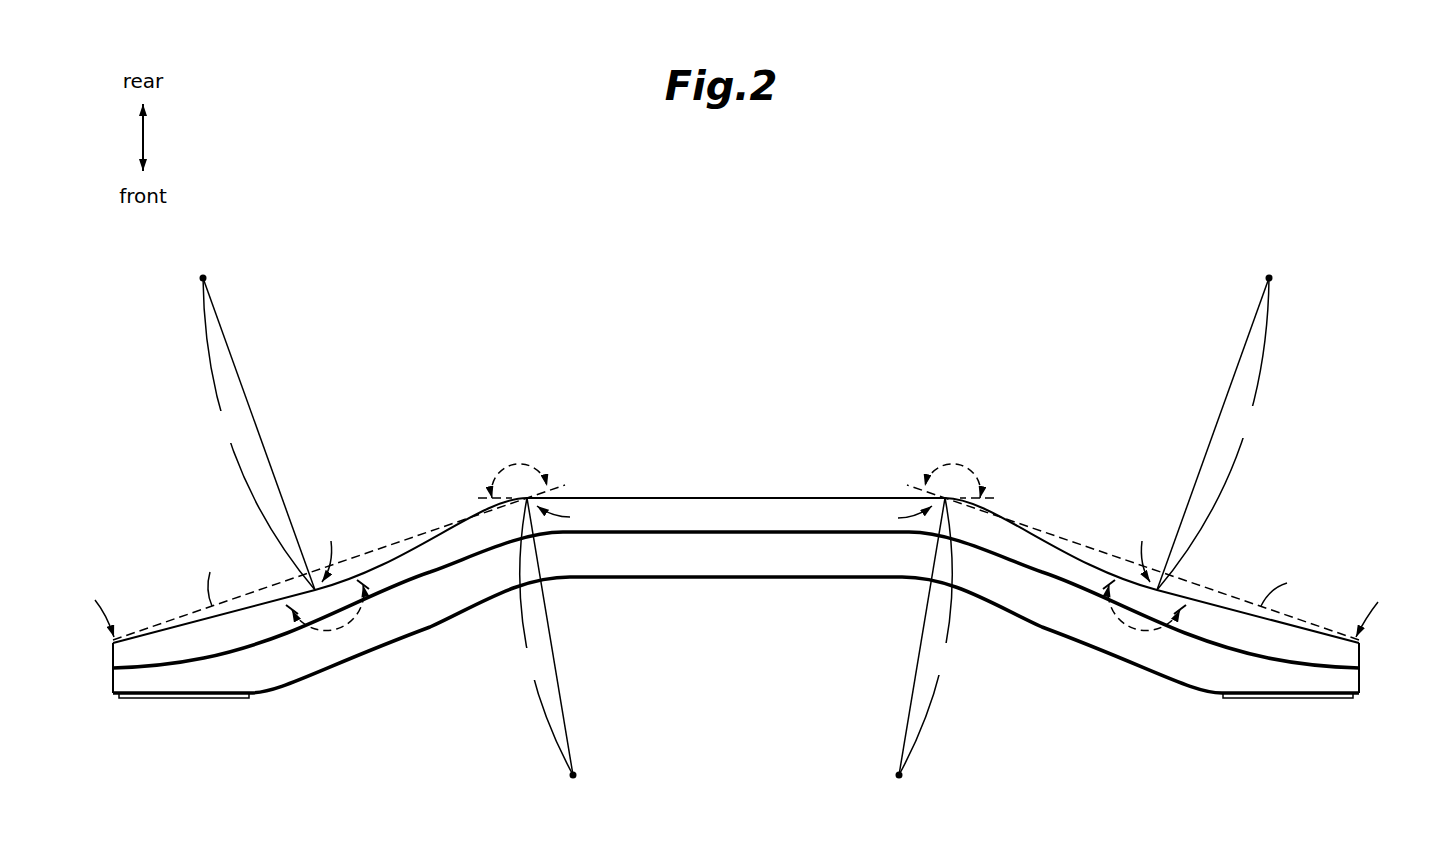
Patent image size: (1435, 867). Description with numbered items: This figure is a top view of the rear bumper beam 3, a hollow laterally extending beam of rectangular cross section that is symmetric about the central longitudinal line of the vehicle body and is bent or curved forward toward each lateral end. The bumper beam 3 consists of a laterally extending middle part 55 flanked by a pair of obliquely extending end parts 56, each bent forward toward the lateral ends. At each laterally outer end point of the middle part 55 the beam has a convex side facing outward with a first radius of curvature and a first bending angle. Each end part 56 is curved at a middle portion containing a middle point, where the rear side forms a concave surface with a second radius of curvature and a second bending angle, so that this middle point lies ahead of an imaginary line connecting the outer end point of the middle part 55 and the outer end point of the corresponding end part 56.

The rear bumper beam 3 is at (848, 392).
The middle part 55 is at (731, 507).
The end part 56 is at (373, 643).